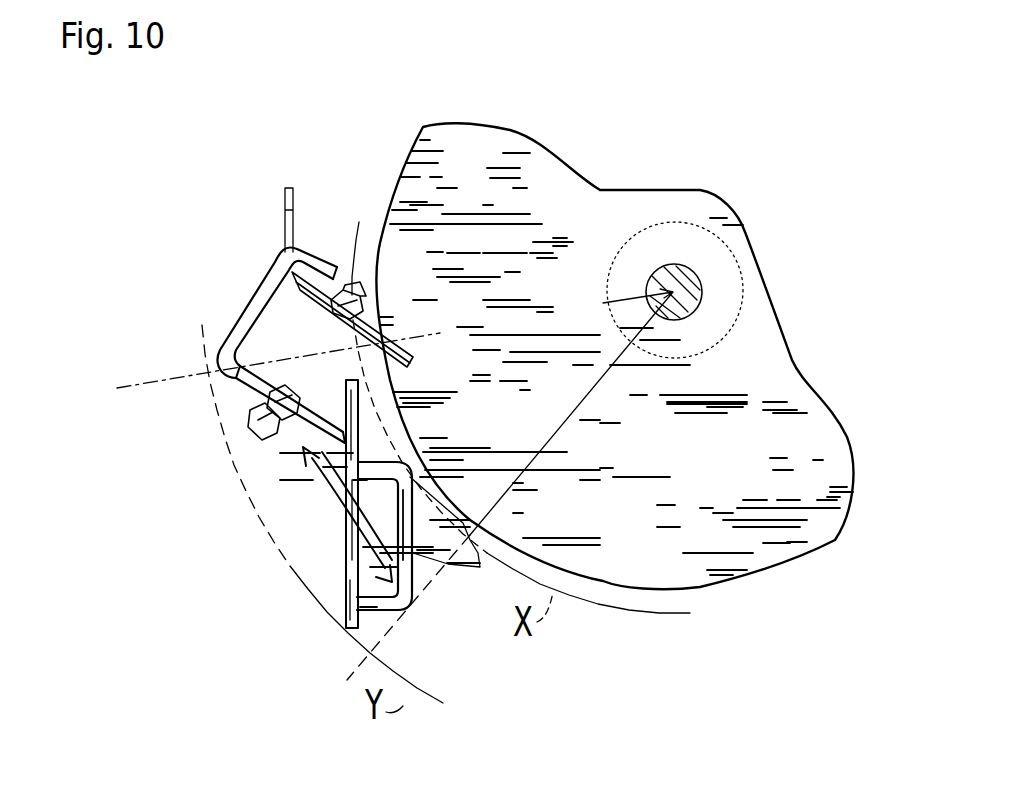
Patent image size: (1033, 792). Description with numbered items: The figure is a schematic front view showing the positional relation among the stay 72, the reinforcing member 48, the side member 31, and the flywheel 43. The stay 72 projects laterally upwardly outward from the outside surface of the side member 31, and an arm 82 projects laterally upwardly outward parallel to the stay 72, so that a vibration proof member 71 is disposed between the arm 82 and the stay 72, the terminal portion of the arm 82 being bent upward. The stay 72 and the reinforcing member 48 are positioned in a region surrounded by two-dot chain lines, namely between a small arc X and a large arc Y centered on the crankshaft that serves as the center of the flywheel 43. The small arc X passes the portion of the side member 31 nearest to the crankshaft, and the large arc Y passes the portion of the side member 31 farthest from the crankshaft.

The flywheel 43 is at (573, 213).
The arm 82 is at (293, 217).
The vibration proof member 71 is at (290, 330).
The stay 72 is at (287, 458).
The side member 31 is at (345, 585).
The reinforcing member 48 is at (405, 598).